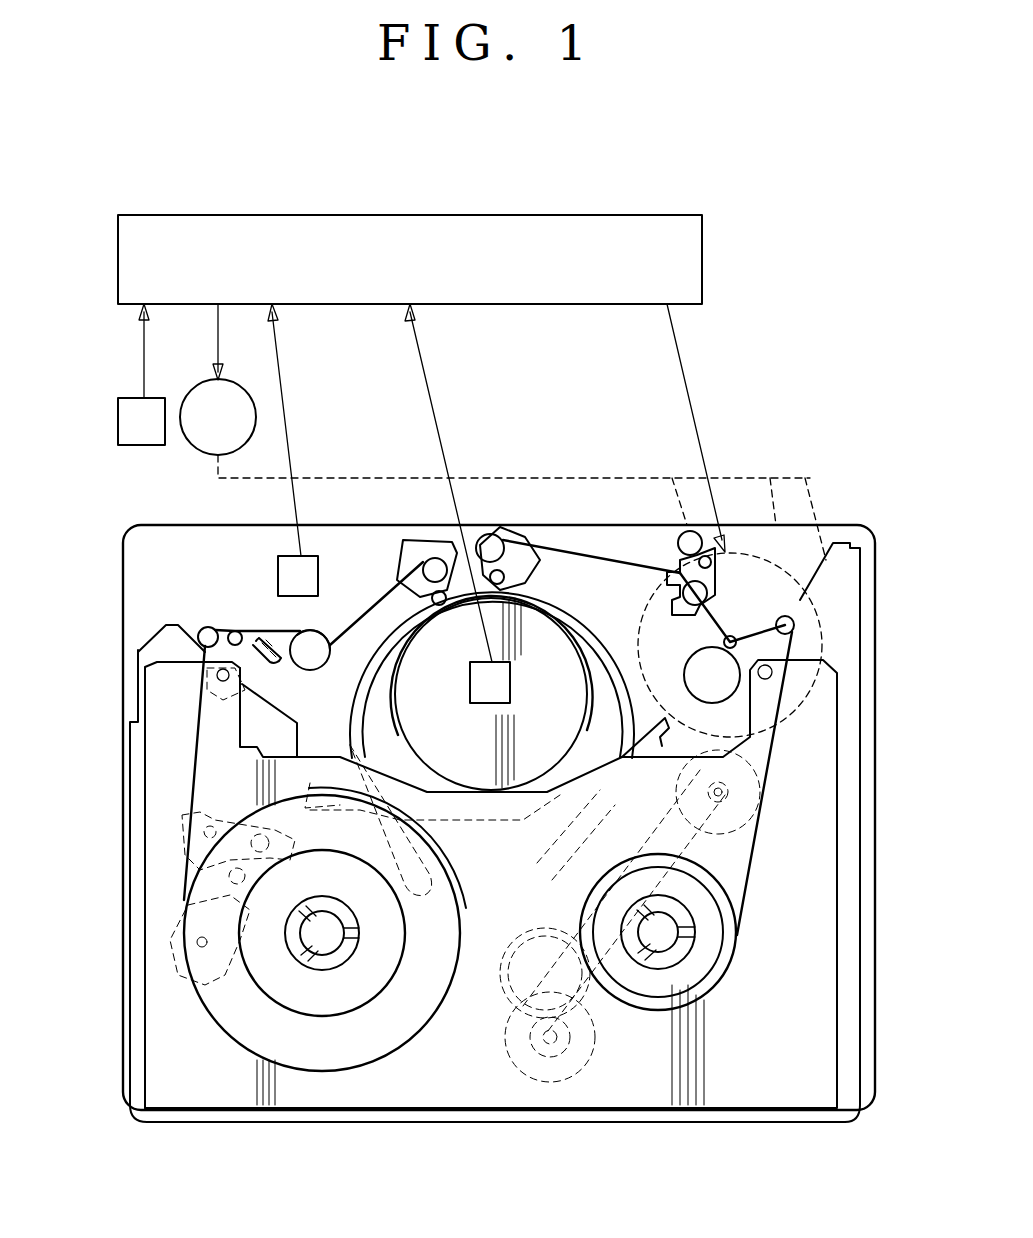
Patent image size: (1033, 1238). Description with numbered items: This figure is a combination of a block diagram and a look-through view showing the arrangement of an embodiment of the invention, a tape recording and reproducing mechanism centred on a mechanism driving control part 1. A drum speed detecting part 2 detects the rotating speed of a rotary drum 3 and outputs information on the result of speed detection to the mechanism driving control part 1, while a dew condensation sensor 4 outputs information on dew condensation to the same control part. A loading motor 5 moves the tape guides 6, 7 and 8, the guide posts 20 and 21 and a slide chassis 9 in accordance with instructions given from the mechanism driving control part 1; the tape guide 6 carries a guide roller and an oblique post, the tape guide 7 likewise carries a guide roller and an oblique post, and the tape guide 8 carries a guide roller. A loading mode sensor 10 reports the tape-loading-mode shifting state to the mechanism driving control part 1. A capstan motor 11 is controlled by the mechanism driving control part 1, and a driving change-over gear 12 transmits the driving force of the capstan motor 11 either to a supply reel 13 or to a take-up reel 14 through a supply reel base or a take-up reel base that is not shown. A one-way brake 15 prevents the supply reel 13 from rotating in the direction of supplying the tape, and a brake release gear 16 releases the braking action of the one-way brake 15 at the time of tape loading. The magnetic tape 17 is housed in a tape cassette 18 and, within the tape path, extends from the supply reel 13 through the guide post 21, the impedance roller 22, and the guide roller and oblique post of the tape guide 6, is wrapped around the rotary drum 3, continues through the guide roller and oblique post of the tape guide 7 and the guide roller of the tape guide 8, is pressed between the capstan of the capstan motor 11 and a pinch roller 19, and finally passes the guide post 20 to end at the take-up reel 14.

The mechanism driving control part 1 is at (660, 215).
The drum speed detecting part 2 is at (480, 703).
The rotary drum 3 is at (547, 727).
The dew condensation sensor 4 is at (318, 575).
The loading motor 5 is at (250, 387).
The tape guide 6 is at (410, 553).
The tape guide 7 is at (505, 546).
The tape guide 8 is at (678, 562).
The slide chassis 9 is at (847, 587).
The loading mode sensor 10 is at (158, 398).
The capstan motor 11 is at (772, 545).
The driving change-over gear 12 is at (497, 960).
The supply reel 13 is at (342, 1003).
The take-up reel 14 is at (650, 1002).
The one-way brake 15 is at (185, 900).
The brake release gear 16 is at (175, 940).
The magnetic tape 17 is at (190, 750).
The tape cassette 18 is at (450, 1062).
The pinch roller 19 is at (683, 680).
The guide post 20 is at (795, 627).
The guide post 21 is at (205, 628).
The impedance roller 22 is at (298, 640).